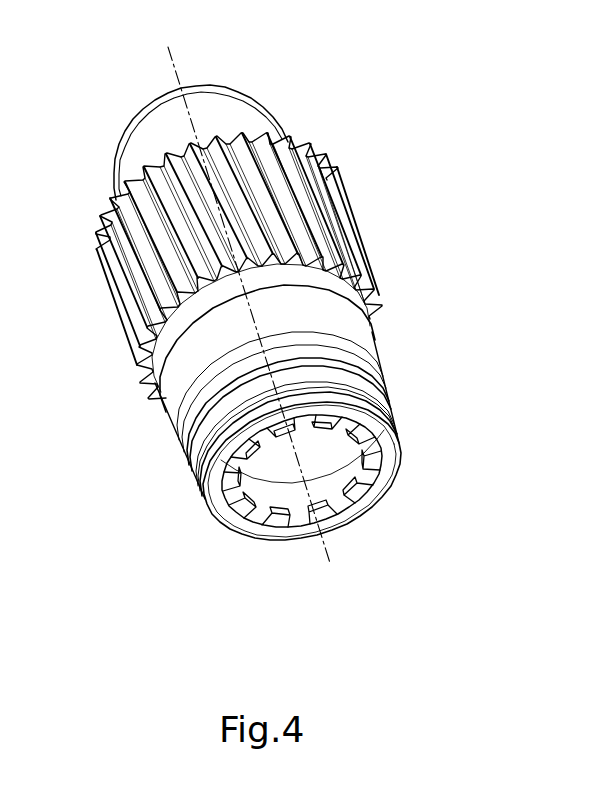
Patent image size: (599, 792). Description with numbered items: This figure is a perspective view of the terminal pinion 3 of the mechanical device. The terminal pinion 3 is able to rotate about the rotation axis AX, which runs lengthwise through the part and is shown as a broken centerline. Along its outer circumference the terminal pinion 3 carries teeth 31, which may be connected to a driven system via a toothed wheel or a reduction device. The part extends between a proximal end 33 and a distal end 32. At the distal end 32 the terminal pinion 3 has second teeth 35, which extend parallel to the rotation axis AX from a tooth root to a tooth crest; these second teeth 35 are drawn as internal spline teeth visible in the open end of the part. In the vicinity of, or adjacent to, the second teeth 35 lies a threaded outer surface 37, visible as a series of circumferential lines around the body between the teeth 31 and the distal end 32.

The terminal pinion 3 is at (406, 148).
The teeth 31 is at (137, 263).
The distal end 32 is at (205, 556).
The proximal end 33 is at (289, 66).
The second teeth 35 is at (275, 497).
The threaded outer surface 37 is at (365, 398).
The rotation axis AX is at (170, 65).